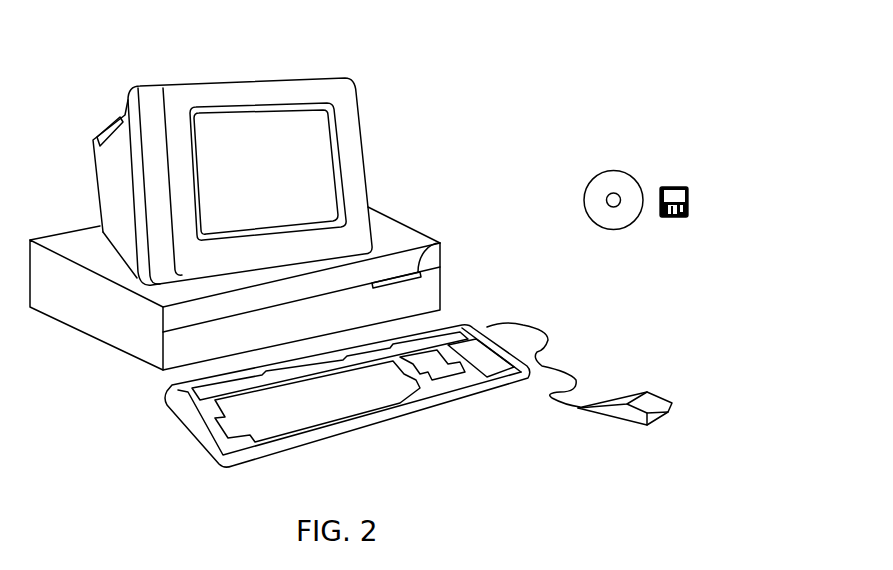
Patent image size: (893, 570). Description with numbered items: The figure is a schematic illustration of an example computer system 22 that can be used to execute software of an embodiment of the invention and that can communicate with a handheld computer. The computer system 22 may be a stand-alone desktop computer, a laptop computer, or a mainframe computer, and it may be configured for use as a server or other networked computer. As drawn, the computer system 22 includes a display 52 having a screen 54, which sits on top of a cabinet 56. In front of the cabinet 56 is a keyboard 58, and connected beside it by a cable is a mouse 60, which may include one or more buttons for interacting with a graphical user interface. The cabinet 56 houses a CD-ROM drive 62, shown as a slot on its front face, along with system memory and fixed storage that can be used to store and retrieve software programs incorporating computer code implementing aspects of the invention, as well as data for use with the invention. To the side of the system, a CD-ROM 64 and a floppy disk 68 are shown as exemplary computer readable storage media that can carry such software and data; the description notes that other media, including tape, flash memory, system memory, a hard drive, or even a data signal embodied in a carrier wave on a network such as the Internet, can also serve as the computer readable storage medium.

The computer system 22 is at (538, 66).
The display 52 is at (366, 180).
The screen 54 is at (335, 127).
The cabinet 56 is at (103, 344).
The keyboard 58 is at (355, 432).
The mouse 60 is at (660, 398).
The CD-ROM drive 62 is at (442, 243).
The CD-ROM 64 is at (609, 162).
The floppy disk 68 is at (674, 178).